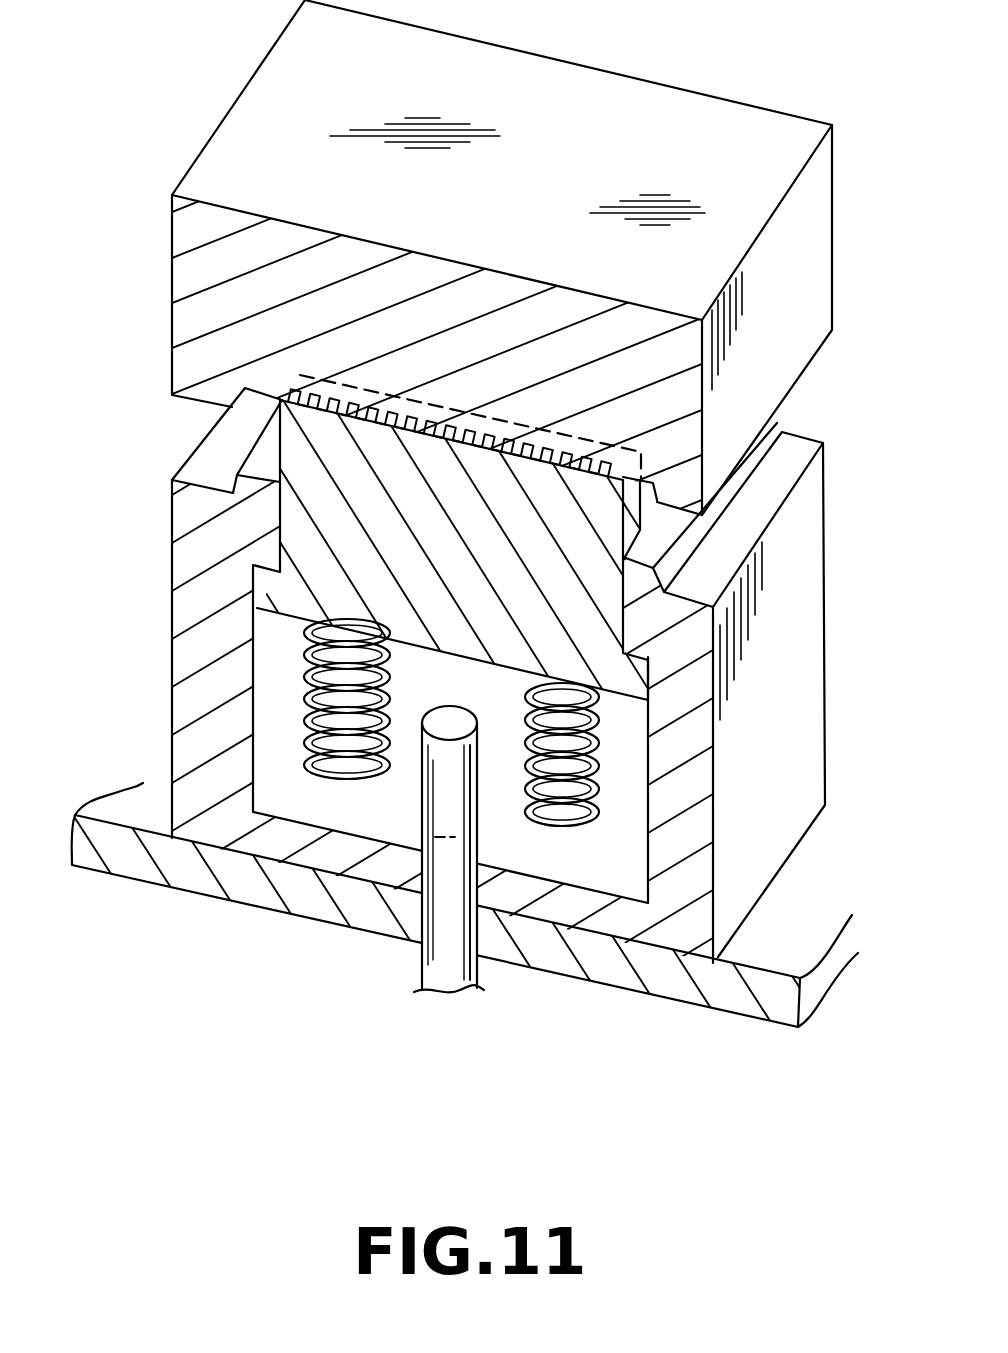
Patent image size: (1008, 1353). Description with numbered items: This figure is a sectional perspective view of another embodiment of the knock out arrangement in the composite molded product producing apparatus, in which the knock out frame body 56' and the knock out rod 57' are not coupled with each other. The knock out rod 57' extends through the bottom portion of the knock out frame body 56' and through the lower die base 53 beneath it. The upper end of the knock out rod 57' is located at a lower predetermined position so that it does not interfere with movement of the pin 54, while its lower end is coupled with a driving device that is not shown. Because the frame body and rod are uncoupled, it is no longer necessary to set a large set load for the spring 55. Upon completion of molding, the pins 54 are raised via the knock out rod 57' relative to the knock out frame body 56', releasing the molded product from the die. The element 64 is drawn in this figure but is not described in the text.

The upper die block 64 is at (670, 107).
The pin 54 is at (330, 520).
The knock out frame body 56' is at (539, 740).
The spring 55 is at (324, 775).
The lower die base 53 is at (192, 876).
The knock out rod 57' is at (493, 873).